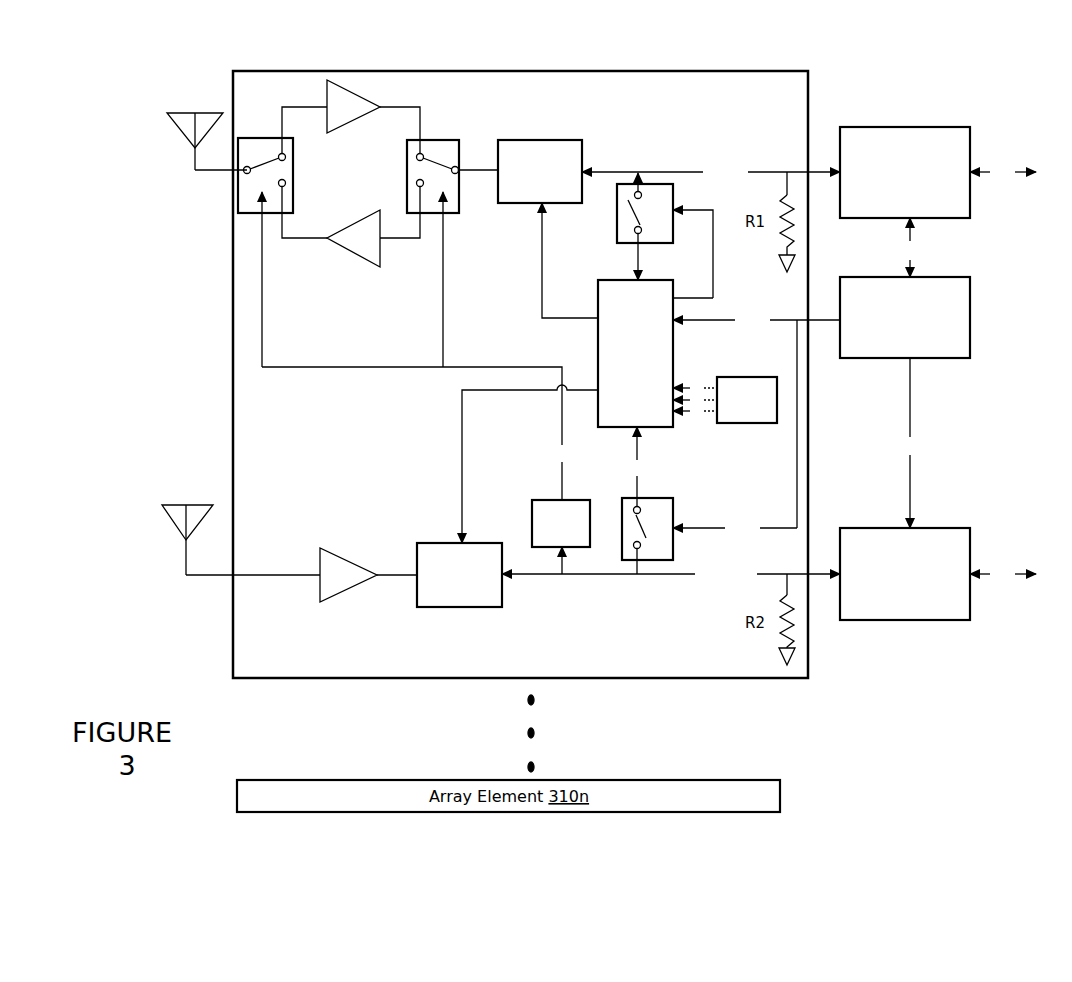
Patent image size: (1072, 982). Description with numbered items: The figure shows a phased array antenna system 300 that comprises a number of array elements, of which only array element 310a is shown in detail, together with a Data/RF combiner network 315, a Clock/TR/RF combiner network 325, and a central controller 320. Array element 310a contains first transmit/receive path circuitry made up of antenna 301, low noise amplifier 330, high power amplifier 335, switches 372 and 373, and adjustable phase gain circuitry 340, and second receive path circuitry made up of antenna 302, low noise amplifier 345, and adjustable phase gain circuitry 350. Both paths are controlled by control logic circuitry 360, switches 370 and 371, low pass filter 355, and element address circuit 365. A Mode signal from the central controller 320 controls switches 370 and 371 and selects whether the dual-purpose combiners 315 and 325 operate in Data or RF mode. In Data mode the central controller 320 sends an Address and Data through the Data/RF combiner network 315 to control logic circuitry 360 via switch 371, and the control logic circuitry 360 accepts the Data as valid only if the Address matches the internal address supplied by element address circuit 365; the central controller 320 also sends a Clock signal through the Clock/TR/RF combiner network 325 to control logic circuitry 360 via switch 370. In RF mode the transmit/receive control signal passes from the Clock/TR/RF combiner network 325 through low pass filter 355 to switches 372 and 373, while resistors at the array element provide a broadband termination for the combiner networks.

The phased array antenna system 300 is at (955, 755).
The antenna 301 is at (183, 113).
The antenna 302 is at (180, 505).
The array element 310a is at (690, 71).
The Data/RF combiner network 315 is at (887, 127).
The central controller 320 is at (935, 358).
The Clock/TR/RF combiner network 325 is at (875, 620).
The low noise amplifier 330 is at (327, 133).
The high power amplifier 335 is at (380, 262).
The adjustable phase gain circuitry 340 is at (582, 142).
The low noise amplifier 345 is at (322, 548).
The adjustable phase gain circuitry 350 is at (475, 607).
The low pass filter 355 is at (550, 500).
The control logic circuitry 360 is at (673, 372).
The element address circuit 365 is at (770, 423).
The switch 370 is at (673, 500).
The switch 371 is at (617, 210).
The switch 372 is at (293, 167).
The switch 373 is at (432, 147).